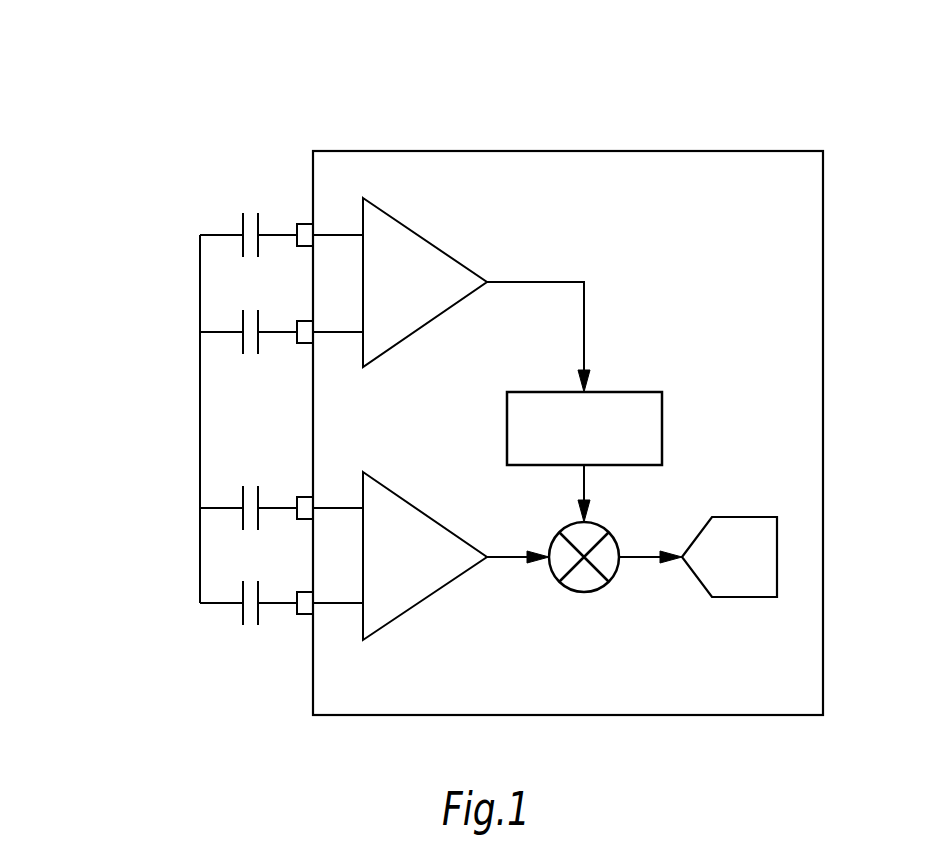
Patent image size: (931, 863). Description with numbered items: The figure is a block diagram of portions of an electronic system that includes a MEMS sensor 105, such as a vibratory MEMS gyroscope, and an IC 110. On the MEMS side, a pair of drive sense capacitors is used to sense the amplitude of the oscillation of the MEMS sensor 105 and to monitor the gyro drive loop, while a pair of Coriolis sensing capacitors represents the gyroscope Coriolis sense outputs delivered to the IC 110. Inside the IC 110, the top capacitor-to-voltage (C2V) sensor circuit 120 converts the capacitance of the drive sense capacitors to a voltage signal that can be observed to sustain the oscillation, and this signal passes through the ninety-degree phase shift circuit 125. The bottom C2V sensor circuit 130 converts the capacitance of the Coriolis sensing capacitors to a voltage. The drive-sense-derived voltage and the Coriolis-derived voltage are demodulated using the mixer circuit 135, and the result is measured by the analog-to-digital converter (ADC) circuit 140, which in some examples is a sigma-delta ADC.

The MEMS sensor 105 is at (122, 38).
The IC 110 is at (806, 151).
The top capacitor-to-voltage (C2V) sensor circuit 120 is at (424, 239).
The phase shift circuit 125 is at (663, 409).
The bottom C2V sensor circuit 130 is at (424, 513).
The mixer circuit 135 is at (606, 530).
The analog-to-digital converter (ADC) circuit 140 is at (757, 517).